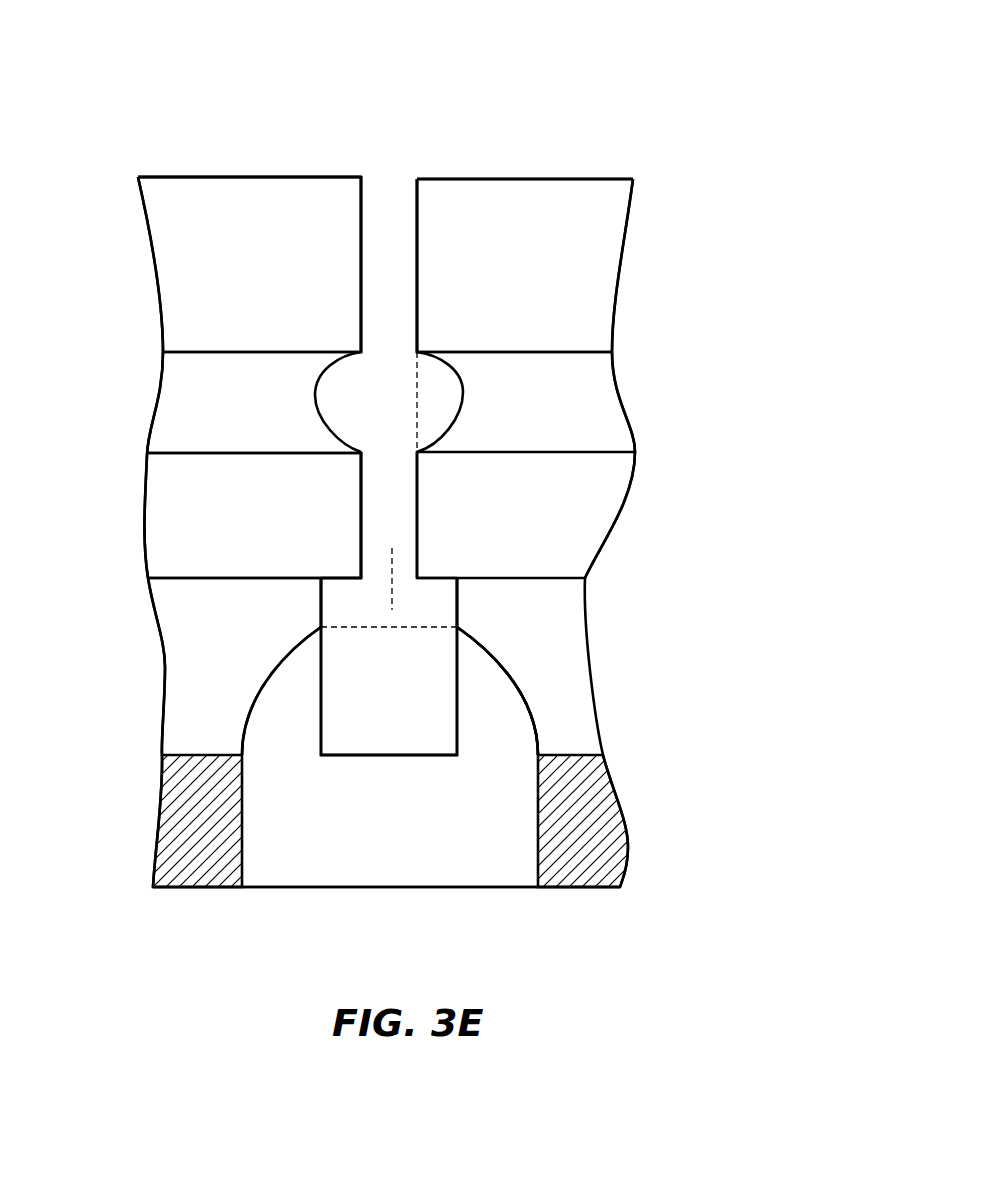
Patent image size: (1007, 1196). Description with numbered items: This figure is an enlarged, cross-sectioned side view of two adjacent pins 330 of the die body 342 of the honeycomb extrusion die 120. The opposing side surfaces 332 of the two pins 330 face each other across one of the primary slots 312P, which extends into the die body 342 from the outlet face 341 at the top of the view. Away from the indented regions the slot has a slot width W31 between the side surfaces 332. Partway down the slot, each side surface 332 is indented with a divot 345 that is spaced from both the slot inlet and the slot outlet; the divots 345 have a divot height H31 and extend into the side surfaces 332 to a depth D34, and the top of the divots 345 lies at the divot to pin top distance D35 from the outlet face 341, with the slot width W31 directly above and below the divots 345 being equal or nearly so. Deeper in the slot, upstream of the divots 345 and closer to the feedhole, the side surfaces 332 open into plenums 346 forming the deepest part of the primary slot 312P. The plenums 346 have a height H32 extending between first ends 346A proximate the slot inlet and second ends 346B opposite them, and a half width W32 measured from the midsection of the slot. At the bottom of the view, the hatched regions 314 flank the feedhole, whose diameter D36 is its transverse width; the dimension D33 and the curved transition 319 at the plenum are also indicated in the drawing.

The honeycomb extrusion die 120 is at (582, 70).
The primary slots 312P is at (391, 158).
The pins 330 is at (176, 175).
The side surfaces 332 is at (358, 182).
The outlet face 341 is at (219, 175).
The die body 342 is at (161, 310).
The divots 345 is at (630, 404).
The plenums 346 is at (161, 663).
The first ends 346A is at (441, 755).
The second ends 346B is at (437, 583).
The corner of recess 319 is at (457, 627).
The substrate 314 is at (243, 865).
The divot to pin top distance D35 is at (206, 178).
The divot height H31 is at (273, 353).
The slot width W31 is at (303, 295).
The divot depth D34 is at (383, 390).
The plenum height H32 is at (216, 579).
The dimension D33 is at (392, 628).
The plenum half width W32 is at (303, 596).
The feedhole diameter D36 is at (537, 840).